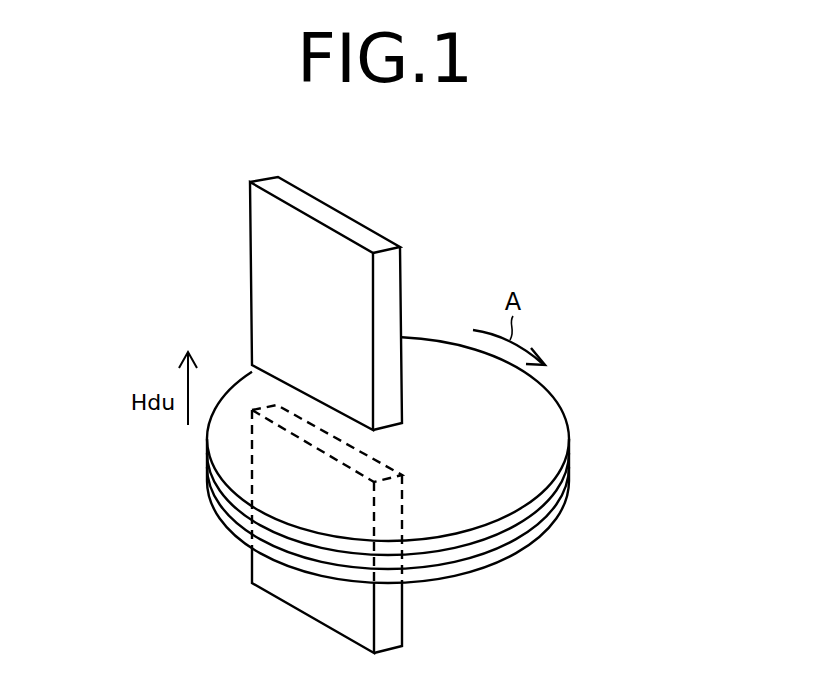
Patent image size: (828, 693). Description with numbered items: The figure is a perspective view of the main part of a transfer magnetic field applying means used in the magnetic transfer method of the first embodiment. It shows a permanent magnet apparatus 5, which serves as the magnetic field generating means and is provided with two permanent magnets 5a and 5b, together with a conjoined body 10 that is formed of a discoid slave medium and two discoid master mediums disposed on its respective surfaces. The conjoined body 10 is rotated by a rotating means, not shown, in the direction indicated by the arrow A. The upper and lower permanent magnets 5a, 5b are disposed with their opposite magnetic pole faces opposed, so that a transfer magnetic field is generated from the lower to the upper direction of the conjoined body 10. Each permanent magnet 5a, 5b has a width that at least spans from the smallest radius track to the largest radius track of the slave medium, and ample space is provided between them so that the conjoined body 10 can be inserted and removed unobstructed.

The permanent magnet apparatus 5 is at (162, 188).
The permanent magnet 5a is at (290, 192).
The permanent magnet 5b is at (276, 597).
The conjoined body 10 is at (548, 435).